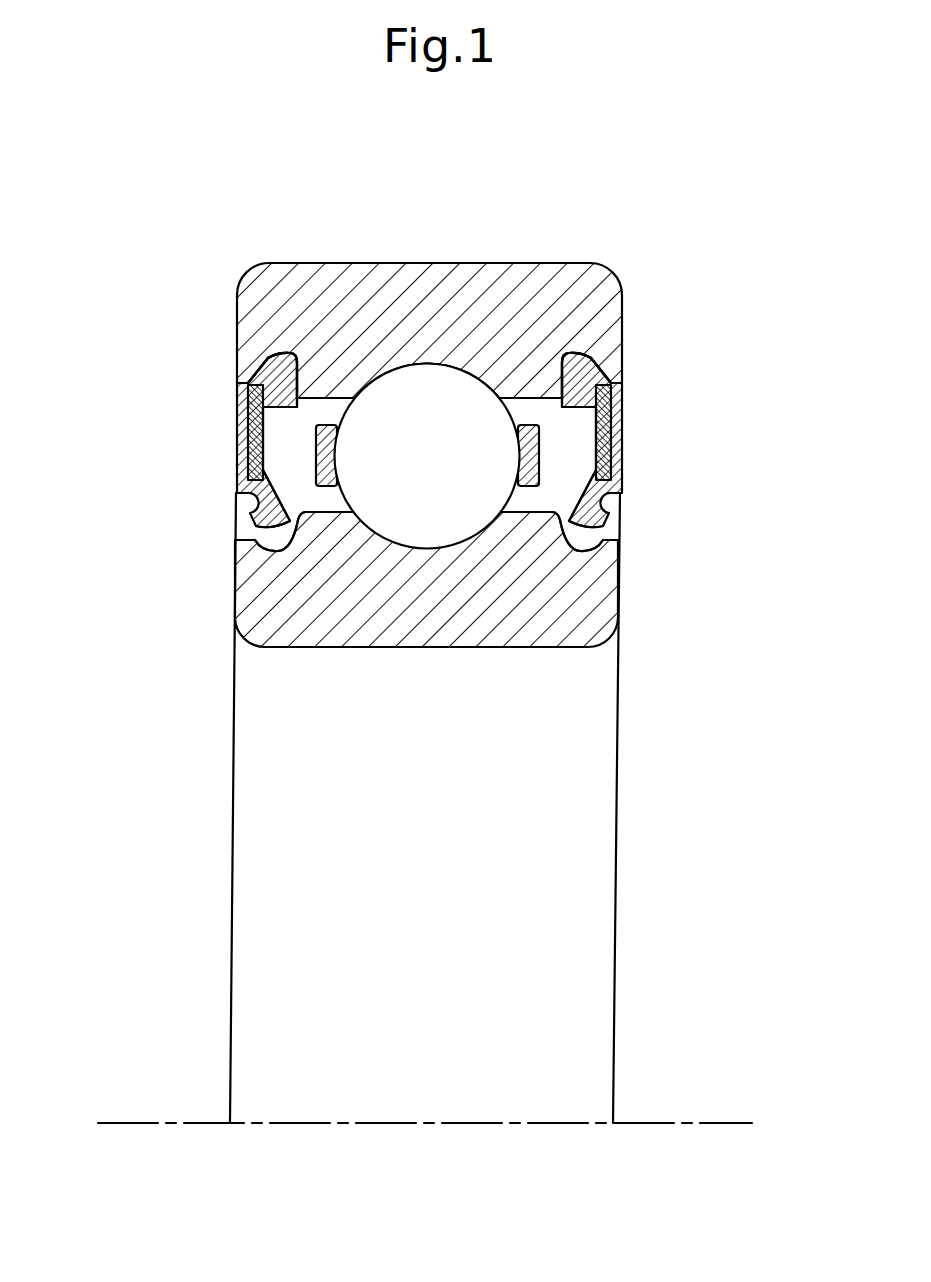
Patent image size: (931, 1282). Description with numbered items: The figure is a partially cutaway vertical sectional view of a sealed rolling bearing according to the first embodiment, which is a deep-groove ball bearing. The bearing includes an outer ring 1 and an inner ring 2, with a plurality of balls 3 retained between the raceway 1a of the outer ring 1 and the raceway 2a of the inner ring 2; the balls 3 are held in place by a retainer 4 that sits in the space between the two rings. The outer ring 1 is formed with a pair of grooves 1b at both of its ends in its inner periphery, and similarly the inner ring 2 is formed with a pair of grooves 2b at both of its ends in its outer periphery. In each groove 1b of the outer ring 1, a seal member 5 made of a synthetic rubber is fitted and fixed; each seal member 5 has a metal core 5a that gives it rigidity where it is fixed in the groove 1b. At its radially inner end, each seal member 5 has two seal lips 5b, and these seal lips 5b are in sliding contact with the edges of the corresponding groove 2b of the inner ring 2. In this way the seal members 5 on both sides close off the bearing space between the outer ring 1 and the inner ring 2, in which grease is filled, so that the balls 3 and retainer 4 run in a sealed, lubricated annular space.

The outer ring 1 is at (327, 268).
The raceway of the outer ring 1a is at (465, 372).
The grooves 1b is at (243, 356).
The inner ring 2 is at (262, 647).
The raceway of the inner ring 2a is at (428, 549).
The grooves 2b is at (266, 548).
The balls 3 is at (428, 405).
The retainer 4 is at (323, 437).
The seal member 5 is at (248, 488).
The metal core 5a is at (245, 380).
The seal lips 5b is at (262, 519).